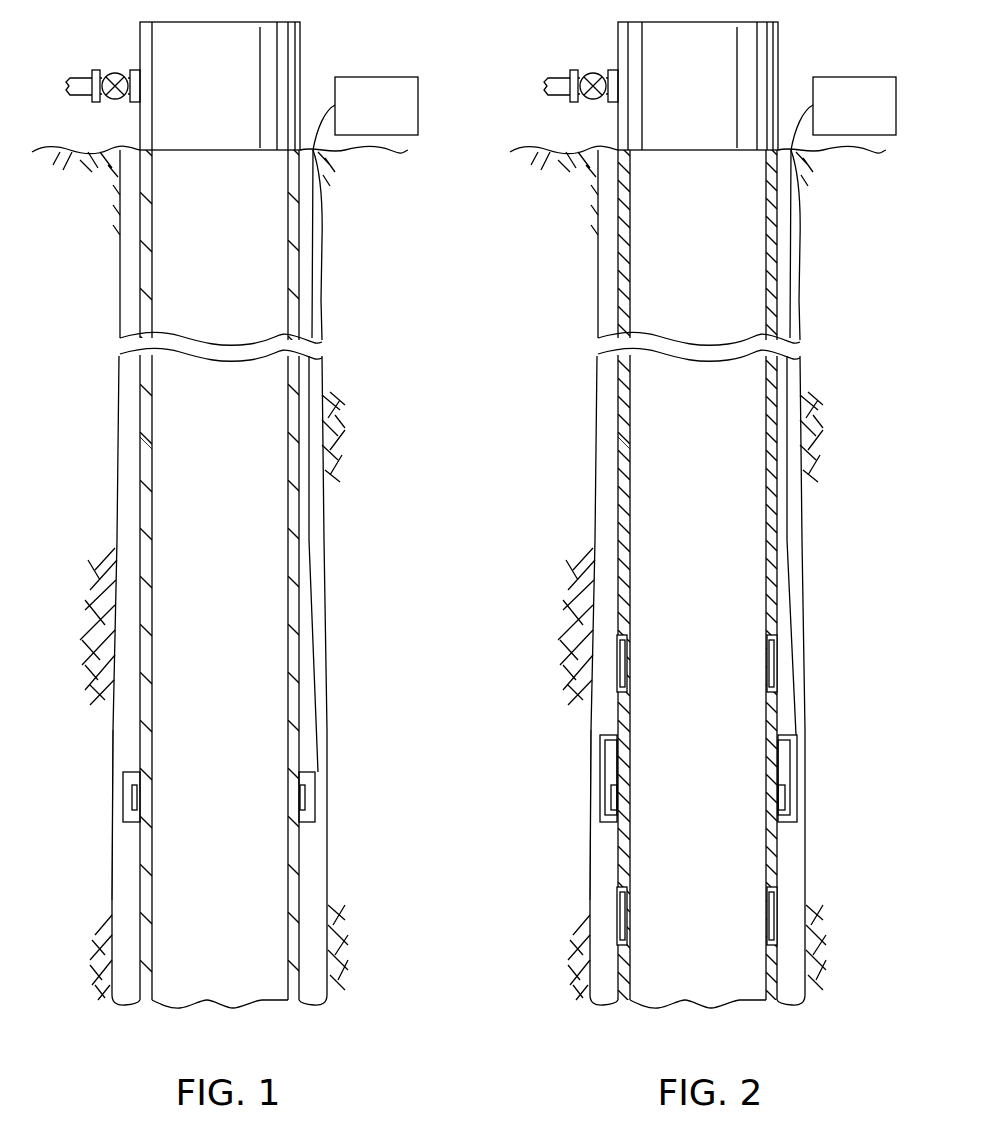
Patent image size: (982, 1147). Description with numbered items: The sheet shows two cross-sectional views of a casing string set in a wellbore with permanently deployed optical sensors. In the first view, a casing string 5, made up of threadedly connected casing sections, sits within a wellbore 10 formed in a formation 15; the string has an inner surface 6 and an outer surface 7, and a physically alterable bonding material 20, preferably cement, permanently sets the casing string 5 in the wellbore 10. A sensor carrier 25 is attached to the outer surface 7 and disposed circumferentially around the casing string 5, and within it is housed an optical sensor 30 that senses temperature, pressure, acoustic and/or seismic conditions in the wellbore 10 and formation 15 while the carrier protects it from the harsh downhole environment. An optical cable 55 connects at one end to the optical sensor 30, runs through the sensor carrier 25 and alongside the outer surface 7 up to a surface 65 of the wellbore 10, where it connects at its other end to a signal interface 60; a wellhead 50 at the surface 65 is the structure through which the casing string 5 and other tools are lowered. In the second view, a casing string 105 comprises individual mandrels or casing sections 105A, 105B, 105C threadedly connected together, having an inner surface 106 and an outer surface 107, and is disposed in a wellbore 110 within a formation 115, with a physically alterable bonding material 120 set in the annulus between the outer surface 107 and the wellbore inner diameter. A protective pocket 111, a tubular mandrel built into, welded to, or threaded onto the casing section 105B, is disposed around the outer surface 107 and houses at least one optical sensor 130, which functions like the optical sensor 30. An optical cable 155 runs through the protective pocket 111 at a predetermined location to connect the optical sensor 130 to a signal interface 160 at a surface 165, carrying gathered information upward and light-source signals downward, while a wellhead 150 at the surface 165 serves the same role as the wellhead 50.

In FIG. 1, the casing string 5 is at (140, 393).
In FIG. 1, the inner surface 6 is at (140, 462).
In FIG. 1, the outer surface 7 is at (140, 437).
In FIG. 1, the wellbore 10 is at (120, 500).
In FIG. 1, the formation 15 is at (100, 610).
In FIG. 1, the physically alterable bonding material 20 is at (125, 902).
In FIG. 1, the sensor carrier 25 is at (312, 812).
In FIG. 1, the optical sensor 30 is at (303, 795).
In FIG. 1, the wellhead 50 is at (140, 35).
In FIG. 1, the optical cable 55 is at (313, 233).
In FIG. 1, the signal interface 60 is at (377, 77).
In FIG. 1, the surface 65 is at (93, 150).
In FIG. 2, the casing string 105 is at (644, 575).
In FIG. 2, the casing section 105A is at (829, 488).
In FIG. 2, the casing section 105B is at (829, 740).
In FIG. 2, the casing section 105C is at (829, 930).
In FIG. 2, the inner surface 106 is at (578, 461).
In FIG. 2, the outer surface 107 is at (571, 431).
In FIG. 2, the wellbore 110 is at (658, 579).
In FIG. 2, the protective pocket 111 is at (738, 790).
In FIG. 2, the formation 115 is at (665, 696).
In FIG. 2, the physically alterable bonding material 120 is at (556, 821).
In FIG. 2, the optical sensor 130 is at (744, 788).
In FIG. 2, the wellhead 150 is at (655, 84).
In FIG. 2, the optical cable 155 is at (832, 420).
In FIG. 2, the signal interface 160 is at (854, 76).
In FIG. 2, the surface 165 is at (693, 174).